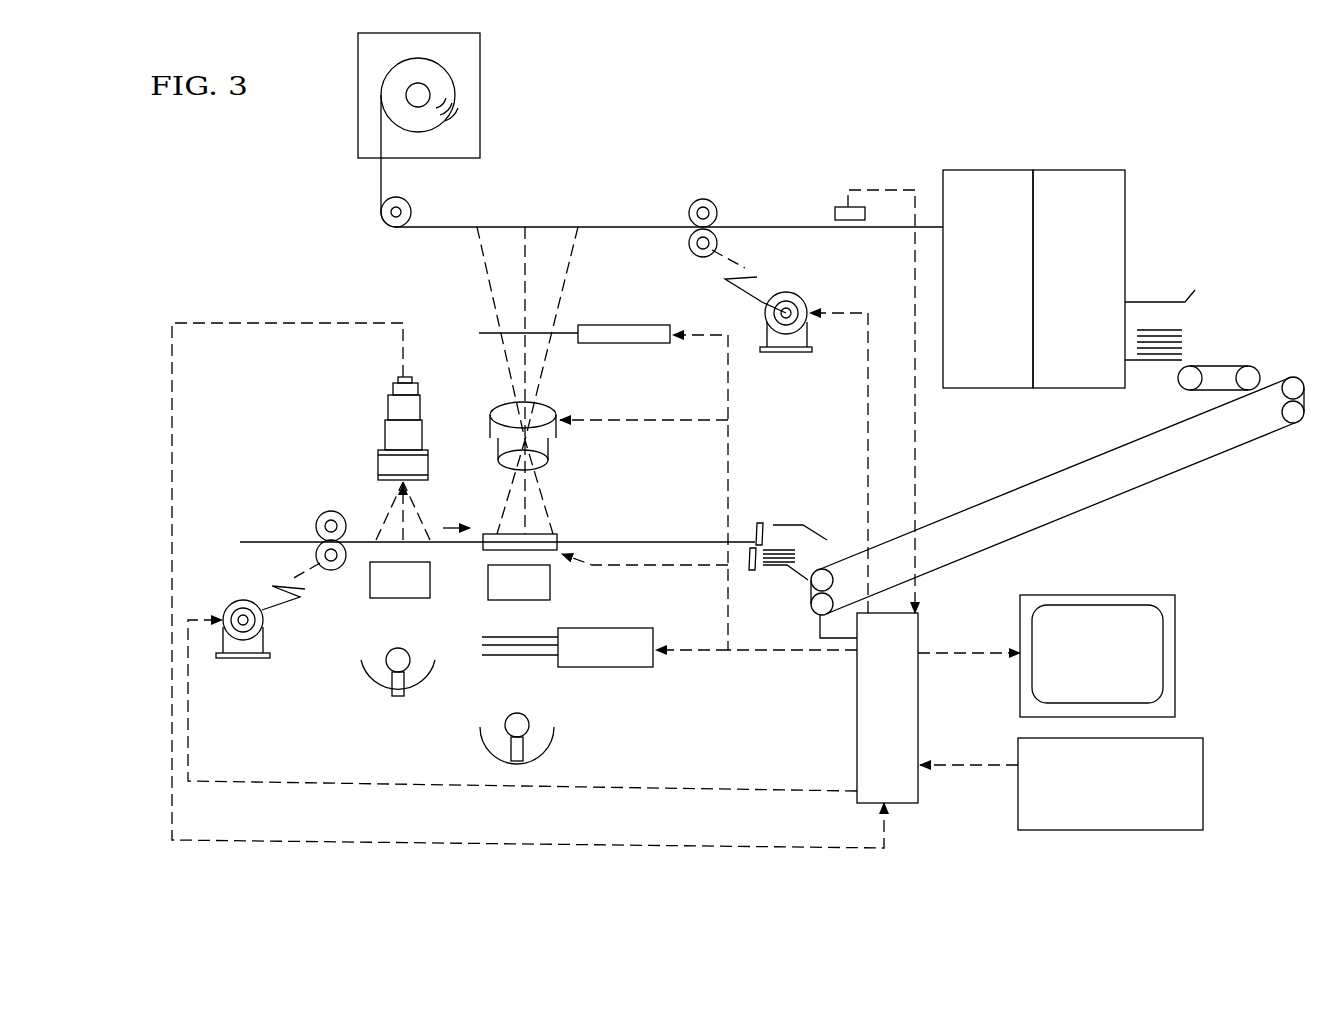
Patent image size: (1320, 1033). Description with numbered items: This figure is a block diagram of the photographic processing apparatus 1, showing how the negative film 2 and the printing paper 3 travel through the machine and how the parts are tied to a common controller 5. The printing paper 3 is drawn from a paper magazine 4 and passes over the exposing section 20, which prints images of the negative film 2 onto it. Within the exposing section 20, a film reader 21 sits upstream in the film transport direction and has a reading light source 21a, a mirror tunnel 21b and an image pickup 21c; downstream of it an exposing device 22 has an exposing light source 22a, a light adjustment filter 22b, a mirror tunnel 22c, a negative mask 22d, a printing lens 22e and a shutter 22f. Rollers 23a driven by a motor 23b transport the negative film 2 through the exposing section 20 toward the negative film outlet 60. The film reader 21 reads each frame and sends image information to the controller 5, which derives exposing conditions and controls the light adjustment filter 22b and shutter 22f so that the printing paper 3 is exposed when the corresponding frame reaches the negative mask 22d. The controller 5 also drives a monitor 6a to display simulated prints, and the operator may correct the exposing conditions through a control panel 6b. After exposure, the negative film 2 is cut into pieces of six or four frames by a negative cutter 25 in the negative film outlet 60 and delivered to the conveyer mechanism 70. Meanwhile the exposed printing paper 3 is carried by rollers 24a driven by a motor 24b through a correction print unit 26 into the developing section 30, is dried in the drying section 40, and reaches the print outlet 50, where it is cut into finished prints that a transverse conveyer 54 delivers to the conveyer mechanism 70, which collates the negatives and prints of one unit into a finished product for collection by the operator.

The photographic processing apparatus 1 is at (1242, 125).
The negative film 2 is at (315, 522).
The printing paper 3 is at (600, 222).
The paper magazine 4 is at (470, 93).
The controller 5 is at (918, 800).
The monitor 6a is at (1175, 655).
The control panel 6b is at (1203, 770).
The exposing section 20 is at (440, 323).
The film reader 21 is at (355, 688).
The reading light source 21a is at (428, 687).
The mirror tunnel 21b is at (367, 578).
The image pickup 21c is at (400, 410).
The exposing device 22 is at (599, 748).
The exposing light source 22a is at (558, 742).
The light adjustment filter 22b is at (620, 667).
The mirror tunnel 22c is at (543, 582).
The negative mask 22d is at (557, 533).
The printing lens 22e is at (552, 405).
The shutter 22f is at (485, 330).
The rollers 23a is at (318, 556).
The motor 23b is at (218, 607).
The rollers 24a is at (690, 255).
The motor 24b is at (800, 297).
The negative cutter 25 is at (757, 520).
The correction print unit 26 is at (840, 207).
The developing section 30 is at (990, 167).
The drying section 40 is at (1092, 167).
The print outlet 50 is at (1175, 292).
The transverse conveyer 54 is at (1220, 367).
The negative film outlet 60 is at (800, 513).
The conveyer mechanism 70 is at (1015, 492).